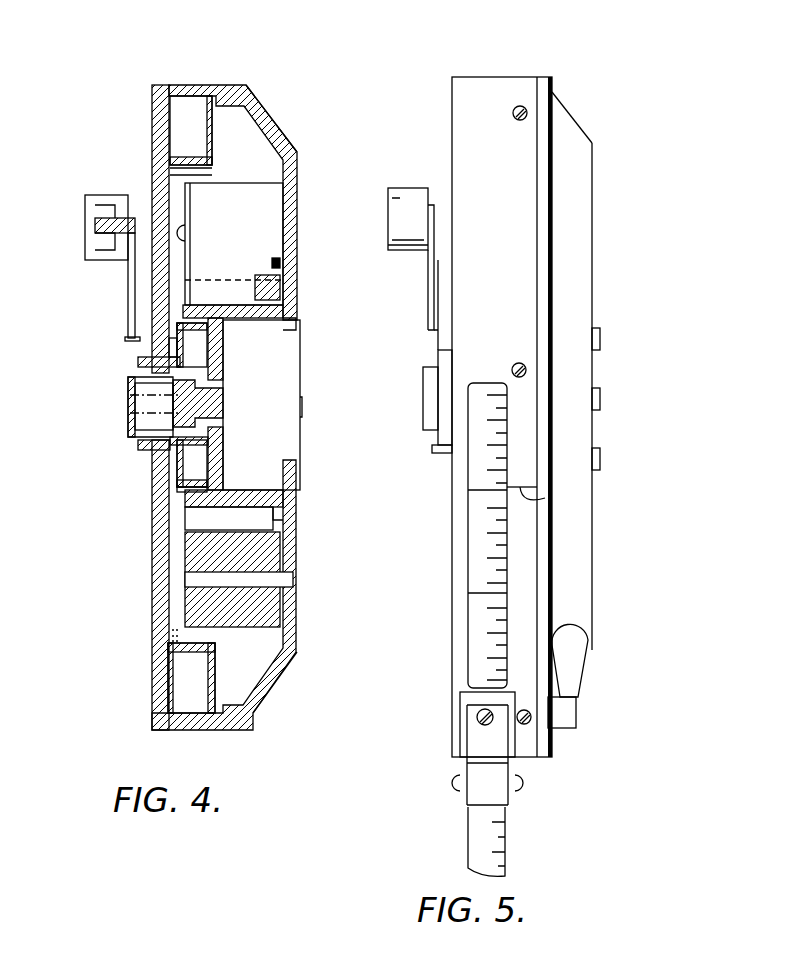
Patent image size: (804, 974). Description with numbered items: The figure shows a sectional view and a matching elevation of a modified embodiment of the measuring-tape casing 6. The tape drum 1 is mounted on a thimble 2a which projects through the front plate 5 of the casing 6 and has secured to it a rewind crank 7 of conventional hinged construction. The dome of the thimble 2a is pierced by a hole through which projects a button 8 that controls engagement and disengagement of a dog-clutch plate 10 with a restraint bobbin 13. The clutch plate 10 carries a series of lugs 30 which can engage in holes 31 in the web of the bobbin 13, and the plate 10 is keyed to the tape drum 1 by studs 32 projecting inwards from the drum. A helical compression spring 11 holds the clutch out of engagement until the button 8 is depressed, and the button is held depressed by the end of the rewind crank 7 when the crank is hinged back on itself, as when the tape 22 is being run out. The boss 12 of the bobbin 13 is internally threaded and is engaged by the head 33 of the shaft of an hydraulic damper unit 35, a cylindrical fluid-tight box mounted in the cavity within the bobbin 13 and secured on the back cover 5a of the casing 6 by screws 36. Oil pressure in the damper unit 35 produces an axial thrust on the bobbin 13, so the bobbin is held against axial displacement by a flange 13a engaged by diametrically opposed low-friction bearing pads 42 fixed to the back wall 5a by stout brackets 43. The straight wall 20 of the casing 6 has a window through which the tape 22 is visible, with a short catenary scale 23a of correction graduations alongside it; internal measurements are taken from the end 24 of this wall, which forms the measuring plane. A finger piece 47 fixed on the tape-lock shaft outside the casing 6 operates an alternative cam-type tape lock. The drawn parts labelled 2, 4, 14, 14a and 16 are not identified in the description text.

In FIG. 4, the tape drum 1 is at (212, 140).
In FIG. 4, the thimble 2a is at (152, 360).
In FIG. 4, the bracket 4 is at (145, 450).
In FIG. 5, the bracket 4 is at (440, 447).
In FIG. 4, the front plate 5 is at (152, 545).
In FIG. 5, the front plate 5 is at (452, 535).
In FIG. 4, the back cover 5a is at (299, 497).
In FIG. 5, the back cover 5a is at (592, 256).
In FIG. 4, the casing 6 is at (258, 92).
In FIG. 5, the casing 6 is at (556, 92).
In FIG. 4, the rewind crank 7 is at (126, 304).
In FIG. 5, the rewind crank 7 is at (428, 273).
In FIG. 4, the button 8 is at (130, 397).
In FIG. 5, the button 8 is at (423, 380).
In FIG. 4, the dog-clutch plate 10 is at (180, 341).
In FIG. 4, the helical compression spring 11 is at (145, 420).
In FIG. 4, the boss 12 is at (193, 443).
In FIG. 4, the restraint bobbin 13 is at (262, 316).
In FIG. 4, the flange 13a is at (288, 292).
In FIG. 4, the partition 14 is at (190, 290).
In FIG. 4, the slot 14a is at (197, 520).
In FIG. 4, the block 16 is at (198, 195).
In FIG. 5, the straight wall 20 is at (489, 193).
In FIG. 5, the tape 22 is at (470, 836).
In FIG. 5, the catenary scale 23a is at (545, 498).
In FIG. 4, the end of the wall 24 is at (180, 88).
In FIG. 5, the end of the wall 24 is at (484, 77).
In FIG. 4, the lugs 30 is at (196, 330).
In FIG. 4, the holes 31 is at (212, 330).
In FIG. 4, the studs 32 is at (195, 445).
In FIG. 4, the head 33 is at (215, 402).
In FIG. 4, the hydraulic damper unit 35 is at (298, 377).
In FIG. 5, the screws 36 is at (601, 455).
In FIG. 4, the bearing pads 42 is at (268, 260).
In FIG. 4, the brackets 43 is at (252, 288).
In FIG. 5, the finger piece 47 is at (570, 660).
In FIG. 5, the tape holder 2 is at (491, 748).